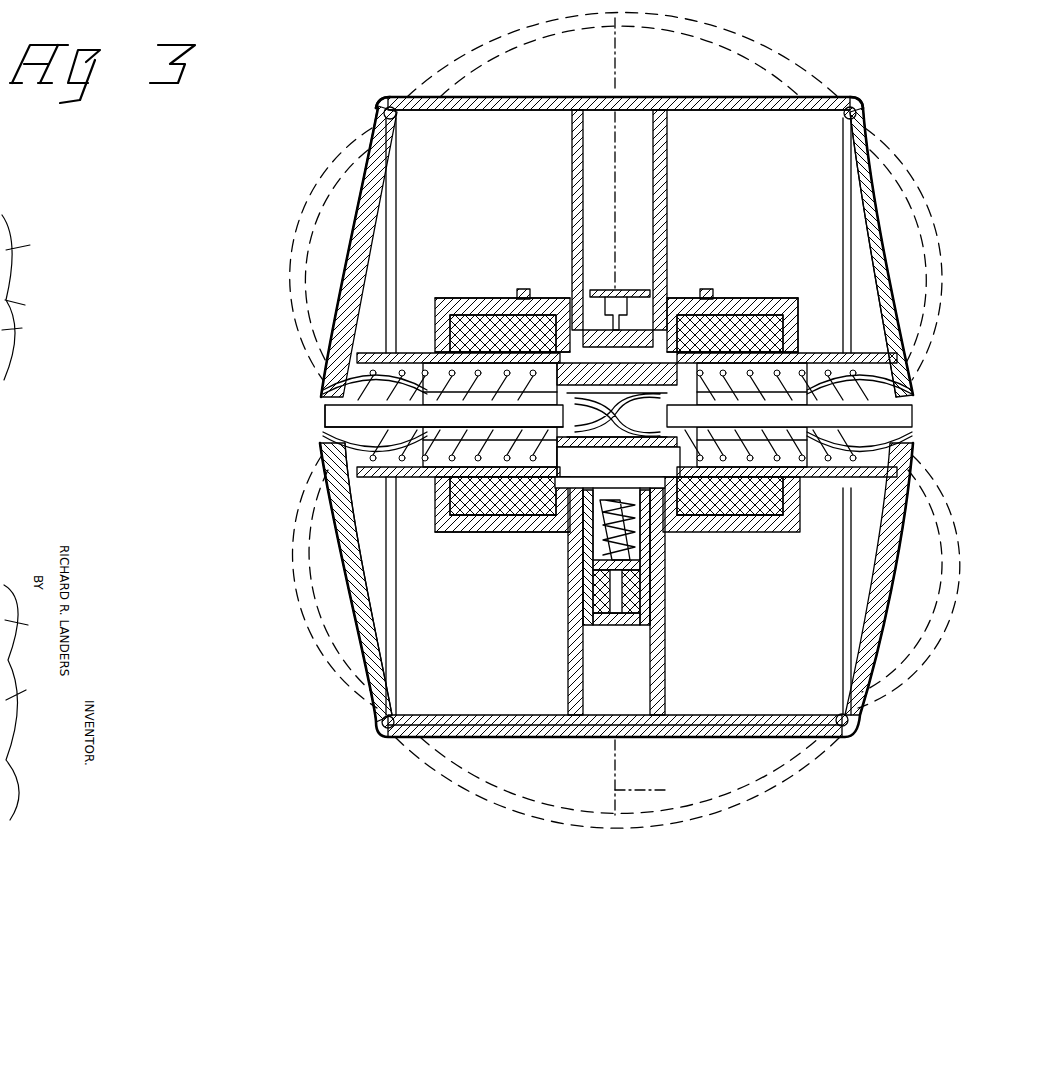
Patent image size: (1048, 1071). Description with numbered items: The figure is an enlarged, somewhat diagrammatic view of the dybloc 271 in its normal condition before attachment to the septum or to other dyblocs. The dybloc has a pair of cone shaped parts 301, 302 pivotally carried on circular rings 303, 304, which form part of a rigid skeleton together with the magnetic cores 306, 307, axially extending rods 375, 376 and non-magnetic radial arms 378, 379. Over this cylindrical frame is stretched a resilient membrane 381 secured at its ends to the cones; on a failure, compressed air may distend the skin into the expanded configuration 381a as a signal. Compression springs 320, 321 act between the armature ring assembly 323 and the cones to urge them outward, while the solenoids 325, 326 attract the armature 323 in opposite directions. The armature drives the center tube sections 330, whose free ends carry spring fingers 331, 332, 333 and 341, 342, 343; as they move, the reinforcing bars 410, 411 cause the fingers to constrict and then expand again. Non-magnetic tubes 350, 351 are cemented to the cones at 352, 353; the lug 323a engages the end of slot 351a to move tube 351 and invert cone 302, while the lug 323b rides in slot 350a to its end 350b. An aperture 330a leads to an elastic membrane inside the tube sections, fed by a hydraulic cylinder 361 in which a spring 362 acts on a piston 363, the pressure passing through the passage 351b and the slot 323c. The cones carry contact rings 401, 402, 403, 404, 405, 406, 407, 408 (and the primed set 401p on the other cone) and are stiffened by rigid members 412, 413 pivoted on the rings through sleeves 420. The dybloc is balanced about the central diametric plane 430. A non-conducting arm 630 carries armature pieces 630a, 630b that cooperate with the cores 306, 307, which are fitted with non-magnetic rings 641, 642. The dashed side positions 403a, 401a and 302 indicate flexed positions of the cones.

The dybloc 271 is at (987, 291).
The cone shaped part 301 is at (332, 525).
The cone shaped part 302 is at (910, 212).
The circular ring 303 is at (393, 100).
The circular ring 304 is at (846, 178).
The magnetic core 306 is at (478, 302).
The magnetic core 307 is at (778, 300).
The compression spring 320 is at (340, 462).
The compression spring 321 is at (905, 432).
The armature ring assembly 323 is at (662, 330).
The lug 323a is at (525, 480).
The lug 323b is at (747, 337).
The slot 323c is at (640, 505).
The solenoid 325 is at (440, 530).
The solenoid 326 is at (745, 520).
The center tube section 330 is at (543, 418).
The aperture 330a is at (605, 540).
The spring finger 331 is at (330, 440).
The spring finger 332 is at (335, 433).
The spring finger 333 is at (330, 412).
The spring finger 341 is at (905, 455).
The spring finger 342 is at (905, 415).
The spring finger 343 is at (905, 362).
The tube 350 is at (410, 355).
The slot 350a is at (480, 363).
The slot end 350b is at (565, 540).
The tube 351 is at (822, 477).
The slot 351a is at (793, 357).
The passage 351b is at (810, 373).
The rubber cement 352 is at (322, 370).
The rubber cement 353 is at (915, 345).
The hydraulic cylinder 361 is at (578, 560).
The spring 362 is at (626, 525).
The piston 363 is at (590, 600).
The axially extending rod 375 is at (762, 108).
The axially extending rod 376 is at (782, 737).
The radial arm 378 is at (575, 134).
The radial arm 379 is at (664, 136).
The resilient cylindrical membrane 381 is at (572, 97).
The expanded skin configuration 381a is at (790, 60).
The contact ring 401 is at (373, 130).
The side diaphragm flexed position 401a is at (355, 700).
The right side wall positions 401p is at (905, 512).
The contact ring 402 is at (365, 160).
The contact ring 403 is at (358, 192).
The side diaphragm flexed position 403a is at (335, 680).
The contact ring 404 is at (352, 220).
The contact ring 405 is at (346, 253).
The contact ring 406 is at (340, 283).
The contact ring 407 is at (335, 313).
The contact ring 408 is at (330, 345).
The reinforcing bar 410 is at (375, 652).
The reinforcing bar 411 is at (382, 150).
The rigid reinforcing member 412 is at (860, 660).
The rigid reinforcing member 413 is at (873, 108).
The sleeve 420 is at (400, 117).
The central diametric plane 430 is at (655, 784).
The non-conducting arm 630 is at (600, 290).
The armature piece 630a is at (523, 289).
The armature piece 630b is at (706, 297).
The non-magnetic ring 641 is at (470, 535).
The non-magnetic ring 642 is at (720, 520).